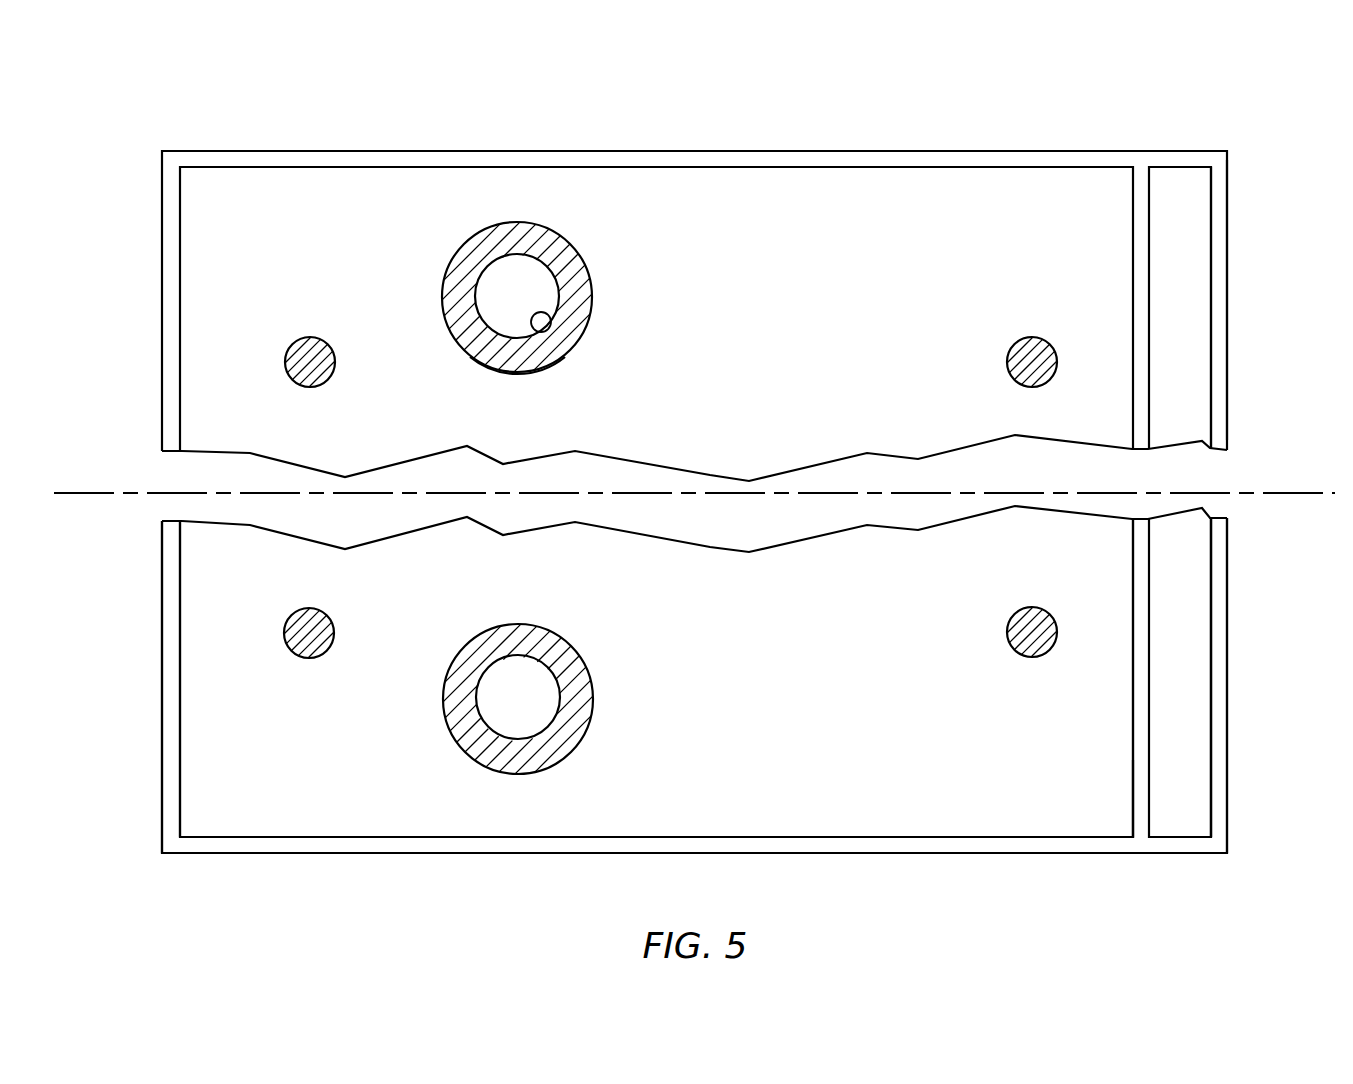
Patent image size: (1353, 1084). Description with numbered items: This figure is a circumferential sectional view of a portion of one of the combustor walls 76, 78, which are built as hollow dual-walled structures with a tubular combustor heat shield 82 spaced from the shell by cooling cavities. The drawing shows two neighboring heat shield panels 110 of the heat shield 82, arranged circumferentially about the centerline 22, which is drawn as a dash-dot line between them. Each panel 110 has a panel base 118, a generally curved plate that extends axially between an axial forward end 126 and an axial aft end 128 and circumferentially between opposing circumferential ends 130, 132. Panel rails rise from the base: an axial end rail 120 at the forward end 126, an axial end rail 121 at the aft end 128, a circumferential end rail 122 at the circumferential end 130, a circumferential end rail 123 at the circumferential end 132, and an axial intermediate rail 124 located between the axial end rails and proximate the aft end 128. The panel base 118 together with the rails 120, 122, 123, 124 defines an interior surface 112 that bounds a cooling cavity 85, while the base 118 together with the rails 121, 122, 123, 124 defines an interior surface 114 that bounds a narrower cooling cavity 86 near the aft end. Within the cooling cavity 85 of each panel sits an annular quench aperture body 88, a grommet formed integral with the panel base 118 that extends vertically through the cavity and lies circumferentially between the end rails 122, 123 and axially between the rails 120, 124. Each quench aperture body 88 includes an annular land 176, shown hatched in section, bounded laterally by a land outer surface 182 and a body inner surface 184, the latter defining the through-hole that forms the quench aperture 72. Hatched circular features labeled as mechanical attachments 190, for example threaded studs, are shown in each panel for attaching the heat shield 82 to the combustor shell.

The centerline 22 is at (1283, 495).
The quench aperture 72 is at (517, 496).
The inner combustor wall 76 is at (754, 447).
The outer combustor wall 78 is at (1262, 122).
The combustor heat shield 82 is at (1280, 498).
The cooling cavity 85 is at (656, 502).
The cooling cavity 86 is at (1180, 502).
The quench aperture body 88 is at (569, 490).
The heat shield panel 110 is at (1236, 272).
The interior surface 112 is at (950, 790).
The interior surface 114 is at (1182, 805).
The panel base 118 is at (857, 817).
The axial end rail 120 is at (170, 588).
The axial end rail 121 is at (1220, 624).
The circumferential end rail 122 is at (348, 160).
The circumferential end rail 123 is at (325, 842).
The axial intermediate rail 124 is at (1140, 699).
The axial forward end 126 is at (163, 650).
The axial aft end 128 is at (1228, 672).
The circumferential end 130 is at (388, 150).
The circumferential end 132 is at (368, 856).
The annular land 176 is at (578, 308).
The land outer surface 182 is at (518, 372).
The body inner surface 184 is at (555, 343).
The mechanical attachment 190 is at (336, 367).